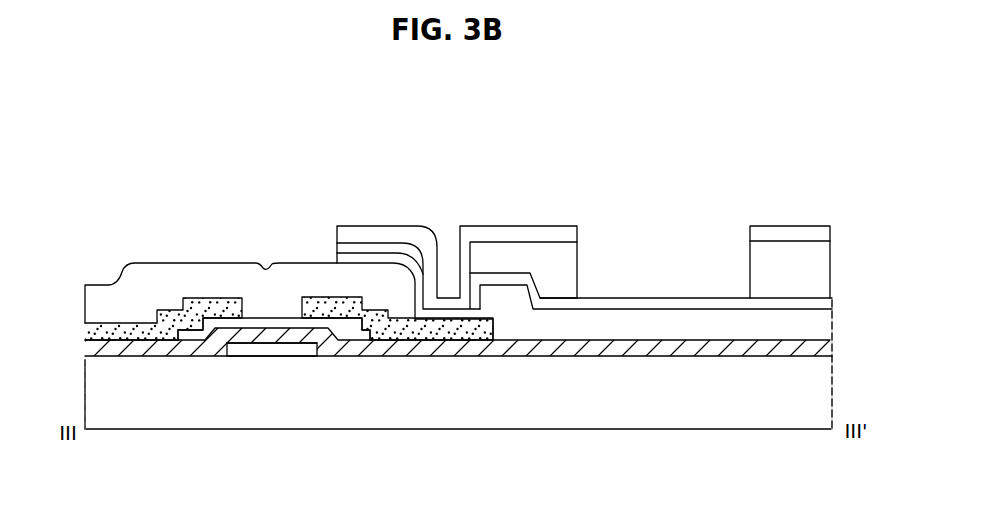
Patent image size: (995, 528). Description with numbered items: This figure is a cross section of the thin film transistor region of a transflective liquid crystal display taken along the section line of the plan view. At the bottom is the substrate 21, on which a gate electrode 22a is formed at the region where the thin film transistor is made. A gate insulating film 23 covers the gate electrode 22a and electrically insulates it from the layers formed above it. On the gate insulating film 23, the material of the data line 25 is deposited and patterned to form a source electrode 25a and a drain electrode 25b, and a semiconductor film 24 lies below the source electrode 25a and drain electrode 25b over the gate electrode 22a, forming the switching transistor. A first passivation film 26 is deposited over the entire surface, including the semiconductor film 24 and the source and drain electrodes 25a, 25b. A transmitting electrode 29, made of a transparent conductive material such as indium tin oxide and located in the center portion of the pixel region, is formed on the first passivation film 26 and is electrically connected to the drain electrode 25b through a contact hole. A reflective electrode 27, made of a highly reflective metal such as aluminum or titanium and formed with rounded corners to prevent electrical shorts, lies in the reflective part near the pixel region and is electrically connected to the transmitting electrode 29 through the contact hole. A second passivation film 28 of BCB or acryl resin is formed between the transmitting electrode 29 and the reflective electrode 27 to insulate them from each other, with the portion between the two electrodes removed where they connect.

The substrate 21 is at (823, 383).
The gate electrode 22a is at (277, 357).
The gate insulating film 23 is at (823, 345).
The semiconductor film 24 is at (268, 325).
The data line 25 is at (88, 334).
The source electrode 25a is at (203, 297).
The drain electrode 25b is at (323, 300).
The first passivation film 26 is at (825, 322).
The reflective electrode 27 is at (358, 232).
The second passivation film 28 is at (398, 247).
The transmitting electrode 29 is at (662, 300).